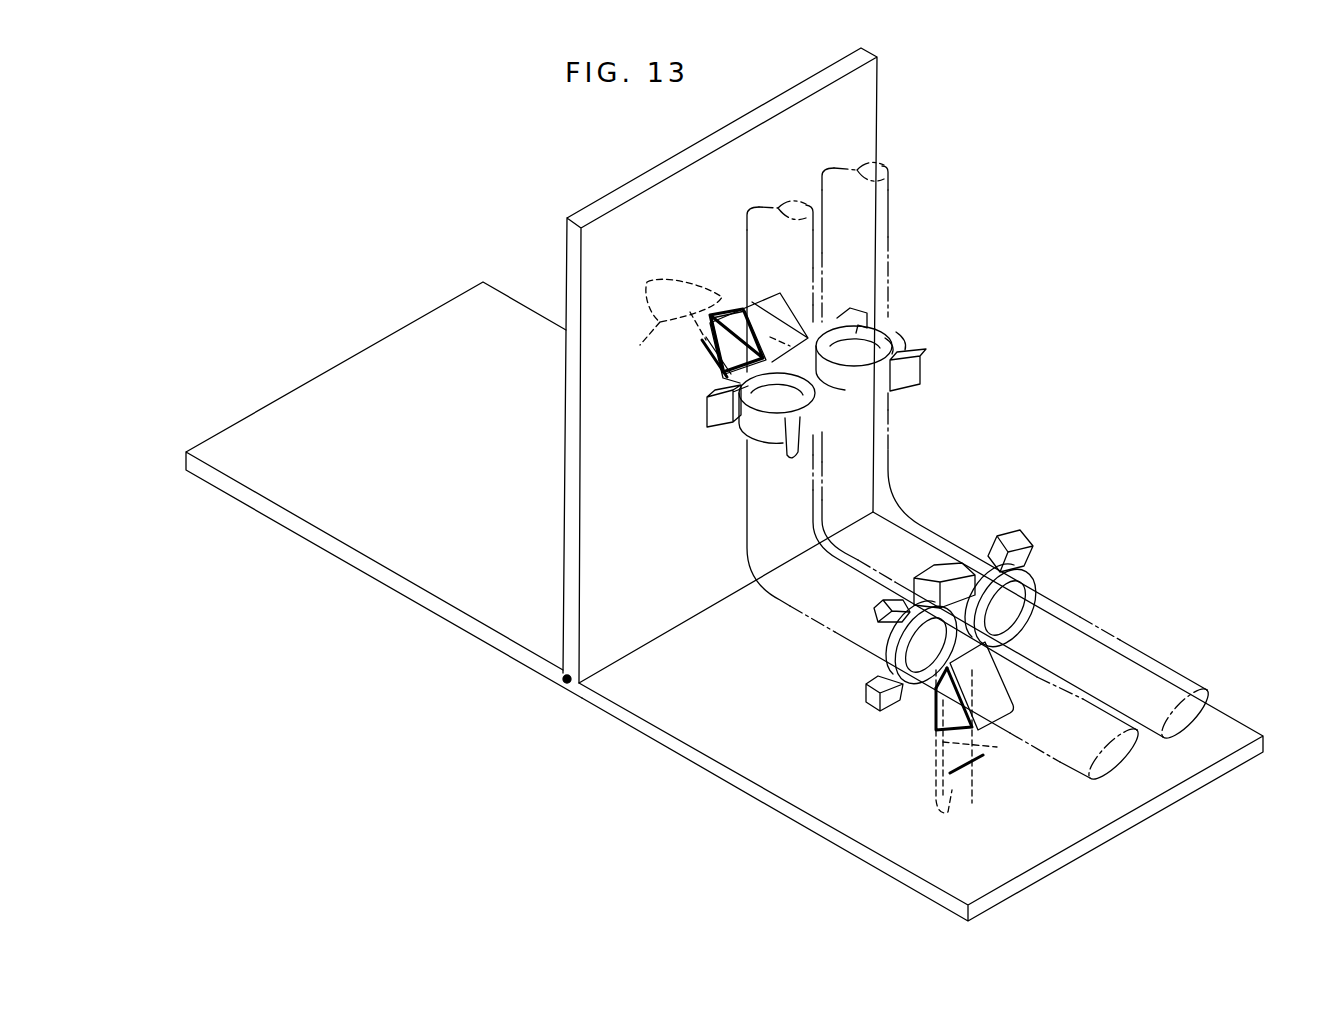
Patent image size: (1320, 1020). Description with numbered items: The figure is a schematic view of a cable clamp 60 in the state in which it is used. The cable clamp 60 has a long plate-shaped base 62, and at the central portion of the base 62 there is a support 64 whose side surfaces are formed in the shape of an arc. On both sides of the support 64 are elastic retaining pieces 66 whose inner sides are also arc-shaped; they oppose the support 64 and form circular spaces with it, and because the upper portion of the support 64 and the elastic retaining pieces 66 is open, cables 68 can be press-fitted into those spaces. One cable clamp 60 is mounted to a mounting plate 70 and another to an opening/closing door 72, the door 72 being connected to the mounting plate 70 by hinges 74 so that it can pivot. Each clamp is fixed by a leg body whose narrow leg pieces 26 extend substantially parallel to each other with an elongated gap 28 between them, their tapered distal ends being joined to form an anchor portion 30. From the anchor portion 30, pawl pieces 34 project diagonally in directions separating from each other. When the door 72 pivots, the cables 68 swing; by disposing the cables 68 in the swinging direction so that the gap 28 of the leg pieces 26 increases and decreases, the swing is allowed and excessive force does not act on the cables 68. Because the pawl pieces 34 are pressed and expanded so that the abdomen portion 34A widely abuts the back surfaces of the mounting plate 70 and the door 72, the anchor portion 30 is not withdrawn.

The leg pieces 26 is at (722, 298).
The gap 28 is at (668, 323).
The anchor portion 30 is at (645, 278).
The pawl pieces 34 is at (706, 290).
The abdomen portion 34A is at (707, 366).
The cable clamp 60 is at (930, 346).
The base 62 is at (707, 397).
The support 64 is at (948, 573).
The elastic retaining pieces 66 is at (1006, 524).
The cables 68 is at (1087, 698).
The mounting plate 70 is at (868, 835).
The opening/closing door 72 is at (866, 107).
The hinges 74 is at (565, 683).